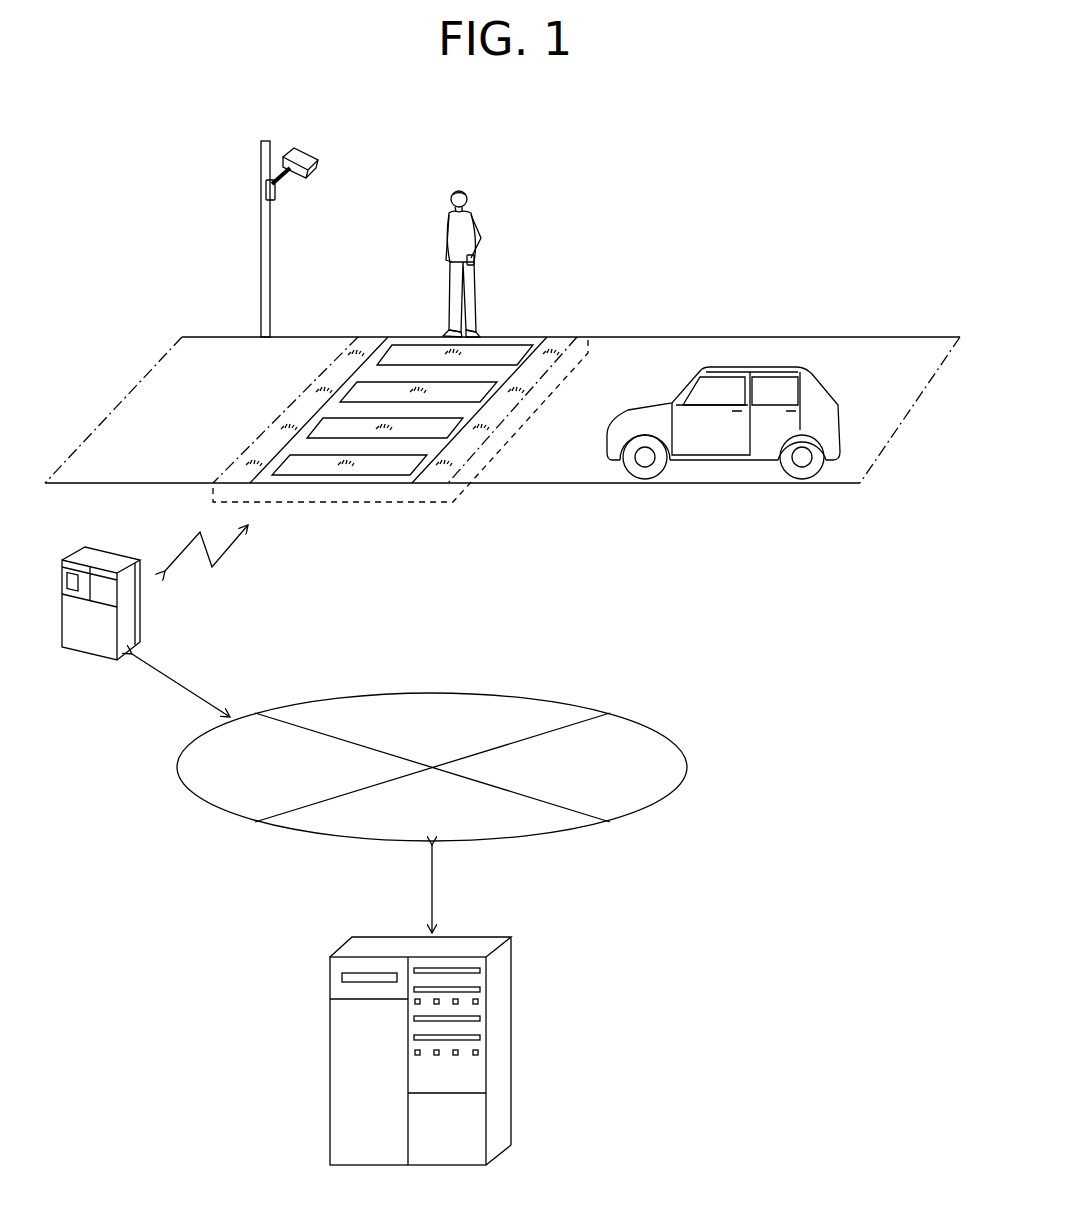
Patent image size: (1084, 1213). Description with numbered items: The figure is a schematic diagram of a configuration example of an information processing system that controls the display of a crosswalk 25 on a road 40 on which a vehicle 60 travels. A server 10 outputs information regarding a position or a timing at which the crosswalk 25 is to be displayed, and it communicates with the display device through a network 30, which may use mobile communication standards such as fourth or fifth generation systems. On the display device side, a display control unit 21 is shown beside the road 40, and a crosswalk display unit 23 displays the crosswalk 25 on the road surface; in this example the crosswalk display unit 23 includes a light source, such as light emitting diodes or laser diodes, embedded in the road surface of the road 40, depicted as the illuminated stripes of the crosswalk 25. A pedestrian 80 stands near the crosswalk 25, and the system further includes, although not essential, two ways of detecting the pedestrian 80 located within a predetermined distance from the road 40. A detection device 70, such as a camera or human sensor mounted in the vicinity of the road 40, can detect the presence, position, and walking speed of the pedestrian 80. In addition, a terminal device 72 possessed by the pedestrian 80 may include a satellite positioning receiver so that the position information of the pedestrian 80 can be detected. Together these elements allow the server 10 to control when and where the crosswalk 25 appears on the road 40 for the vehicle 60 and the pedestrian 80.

The server 10 is at (511, 1067).
The display control unit 21 is at (107, 558).
The crosswalk display unit 23 is at (425, 497).
The crosswalk 25 is at (372, 345).
The network 30 is at (673, 735).
The road 40 is at (240, 389).
The vehicle 60 is at (808, 372).
The detection device 70 is at (302, 158).
The terminal device 72 is at (474, 262).
The pedestrian 80 is at (476, 217).